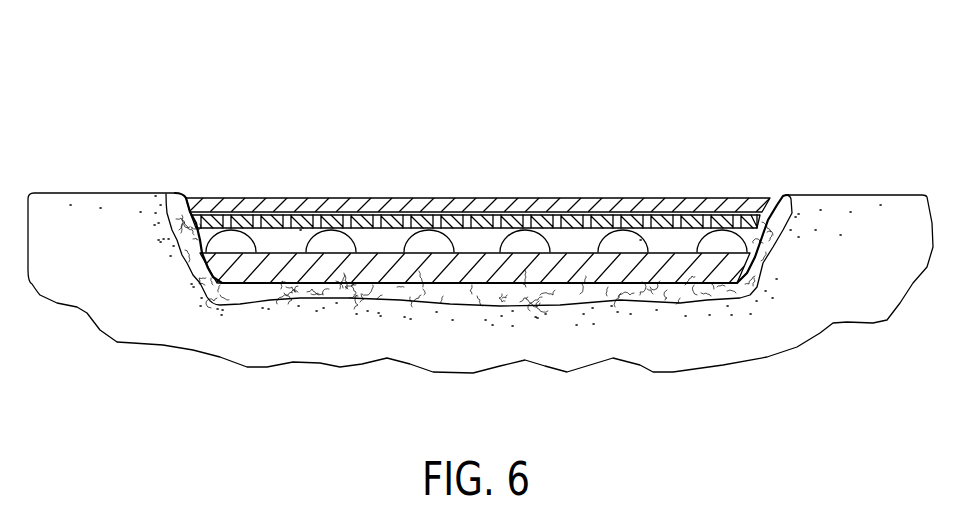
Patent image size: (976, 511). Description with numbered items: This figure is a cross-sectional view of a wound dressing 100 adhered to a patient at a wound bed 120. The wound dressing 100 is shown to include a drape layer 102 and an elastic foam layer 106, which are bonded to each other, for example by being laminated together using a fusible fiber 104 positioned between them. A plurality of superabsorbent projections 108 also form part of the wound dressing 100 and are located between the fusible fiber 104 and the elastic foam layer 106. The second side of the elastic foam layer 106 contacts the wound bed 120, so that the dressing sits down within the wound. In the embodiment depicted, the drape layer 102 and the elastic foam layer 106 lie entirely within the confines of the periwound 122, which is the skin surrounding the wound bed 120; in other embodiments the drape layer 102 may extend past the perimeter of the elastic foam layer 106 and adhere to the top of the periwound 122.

The wound dressing 100 is at (198, 62).
The drape layer 102 is at (502, 205).
The fusible fiber 104 is at (558, 220).
The elastic foam layer 106 is at (377, 268).
The superabsorbent projections 108 is at (710, 238).
The wound bed 120 is at (243, 293).
The periwound 122 is at (105, 220).